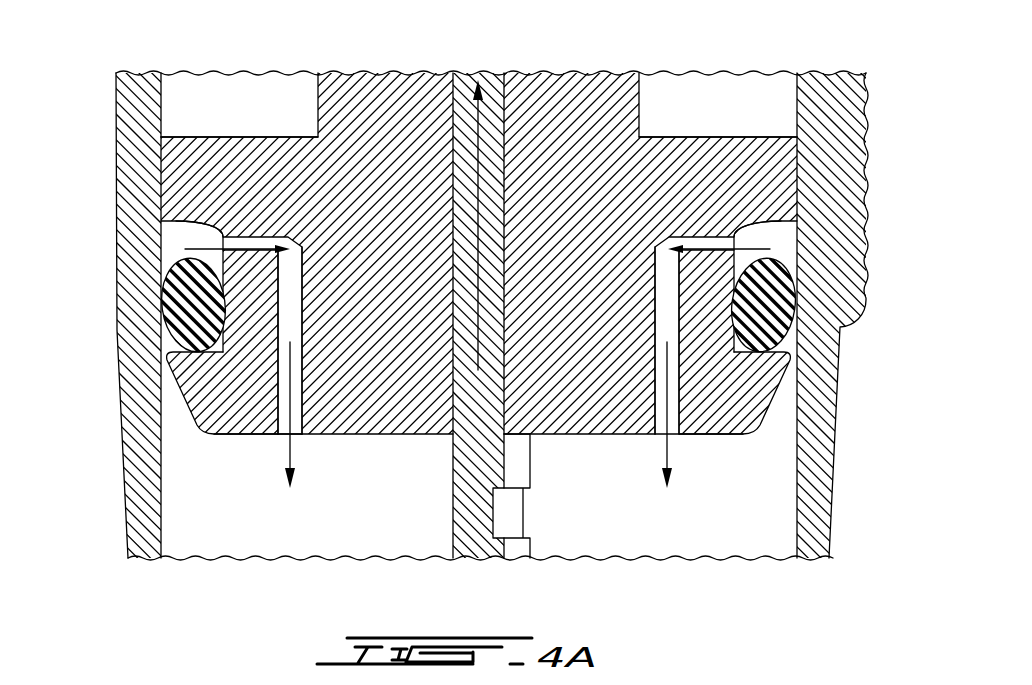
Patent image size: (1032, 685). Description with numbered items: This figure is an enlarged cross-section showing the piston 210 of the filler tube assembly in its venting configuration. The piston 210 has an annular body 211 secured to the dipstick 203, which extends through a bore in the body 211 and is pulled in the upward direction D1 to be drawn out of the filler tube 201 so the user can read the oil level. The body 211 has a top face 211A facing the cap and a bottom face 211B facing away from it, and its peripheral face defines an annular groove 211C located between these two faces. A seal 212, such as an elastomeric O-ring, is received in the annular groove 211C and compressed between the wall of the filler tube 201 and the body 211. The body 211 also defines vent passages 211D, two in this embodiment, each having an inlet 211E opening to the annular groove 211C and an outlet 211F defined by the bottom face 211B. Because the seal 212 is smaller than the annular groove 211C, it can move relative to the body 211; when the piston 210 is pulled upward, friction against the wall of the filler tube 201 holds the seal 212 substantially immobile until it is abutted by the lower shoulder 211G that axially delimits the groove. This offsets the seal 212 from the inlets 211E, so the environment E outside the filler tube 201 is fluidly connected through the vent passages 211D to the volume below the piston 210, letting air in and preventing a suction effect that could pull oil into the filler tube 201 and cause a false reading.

The filler tube 201 is at (138, 294).
The dipstick 203 is at (471, 523).
The piston 210 is at (604, 80).
The body 211 is at (373, 134).
The top face 211A is at (243, 137).
The bottom face 211B is at (235, 436).
The annular groove 211C is at (172, 232).
The vent passage 211D is at (282, 383).
The inlet 211E is at (165, 249).
The outlet 211F is at (297, 437).
The lower shoulder 211G is at (282, 382).
The seal 212 is at (773, 305).
The upward direction D1 is at (480, 146).
The environment E is at (185, 42).